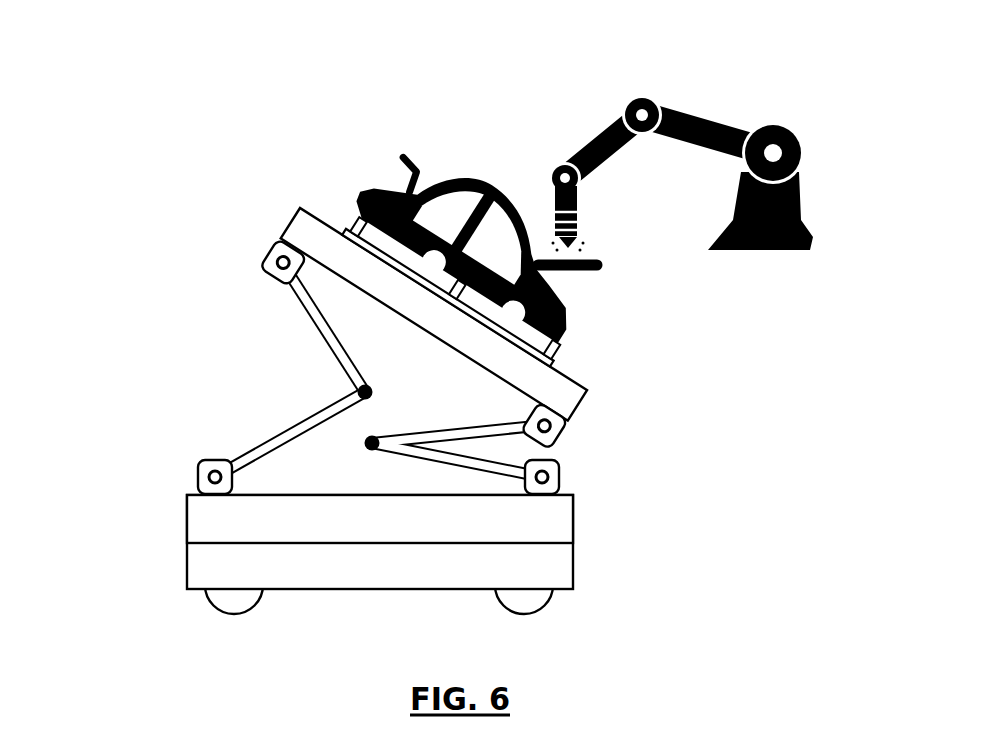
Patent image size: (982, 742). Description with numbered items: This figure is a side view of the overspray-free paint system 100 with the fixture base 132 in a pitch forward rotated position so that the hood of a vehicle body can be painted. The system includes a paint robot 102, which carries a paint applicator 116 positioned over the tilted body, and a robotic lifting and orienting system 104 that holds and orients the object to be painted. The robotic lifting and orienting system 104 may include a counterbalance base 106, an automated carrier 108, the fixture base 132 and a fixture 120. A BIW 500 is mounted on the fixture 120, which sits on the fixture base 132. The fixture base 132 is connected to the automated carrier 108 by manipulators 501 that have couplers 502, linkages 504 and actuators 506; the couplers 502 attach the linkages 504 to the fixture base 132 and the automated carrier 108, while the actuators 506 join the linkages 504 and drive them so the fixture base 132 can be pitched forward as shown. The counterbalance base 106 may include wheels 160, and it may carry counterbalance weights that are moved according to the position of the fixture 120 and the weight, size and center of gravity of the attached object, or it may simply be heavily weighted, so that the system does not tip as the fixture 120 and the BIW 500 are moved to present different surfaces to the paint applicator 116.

The overspray-free paint system 100 is at (156, 57).
The paint robot 102 is at (800, 199).
The robotic lifting and orienting system 104 is at (208, 211).
The counterbalance base 106 is at (187, 568).
The automated carrier 108 is at (187, 521).
The paint applicator 116 is at (576, 239).
The fixture 120 is at (452, 291).
The fixture base 132 is at (434, 314).
The wheels 160 is at (212, 603).
The BIW 500 is at (476, 239).
The manipulators 501 is at (190, 322).
The couplers 502 is at (266, 264).
The linkages 504 is at (307, 320).
The actuators 506 is at (364, 392).